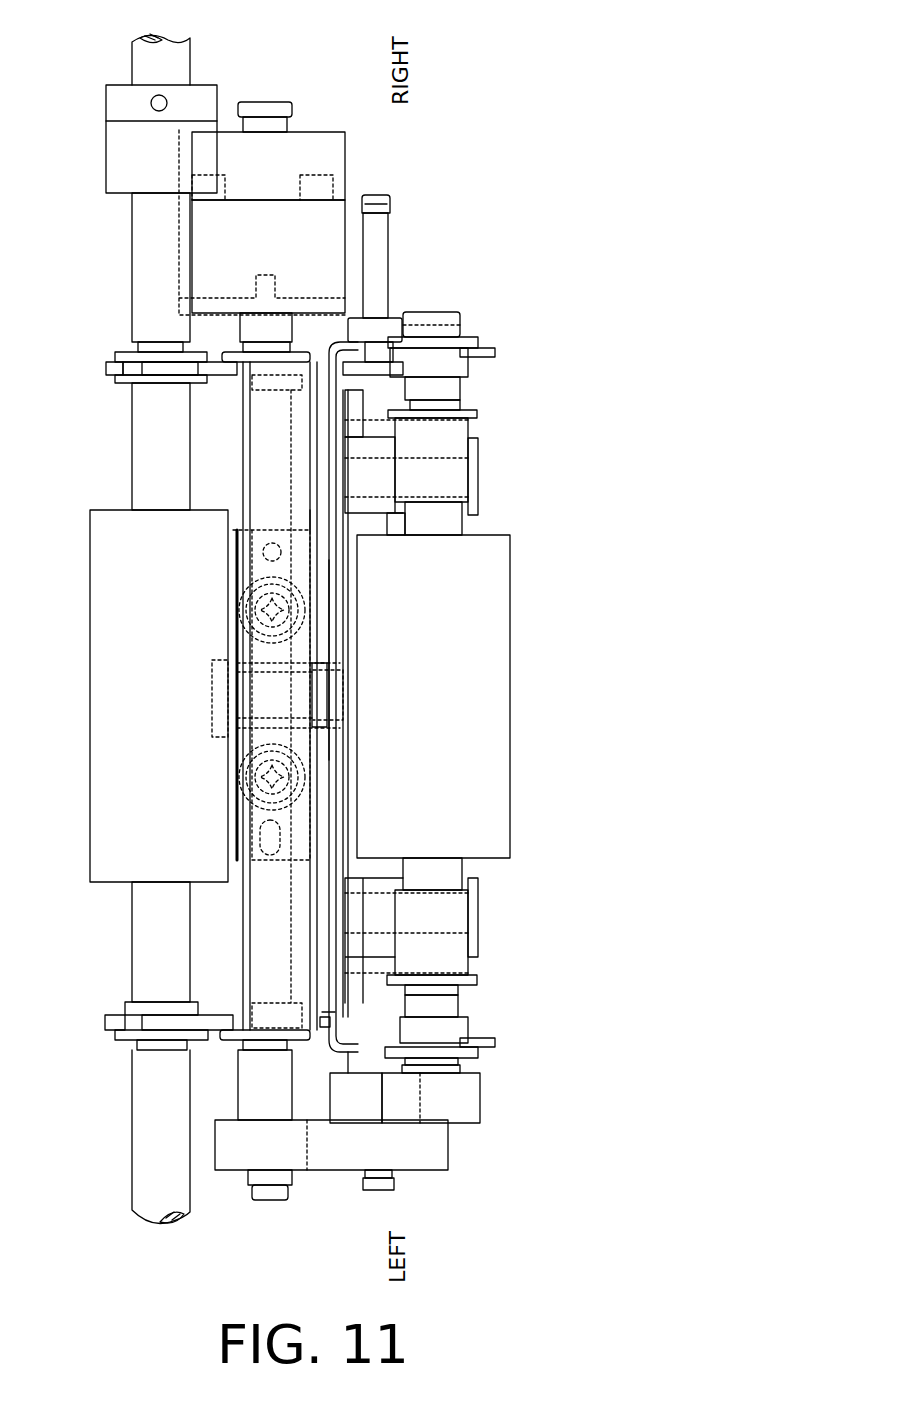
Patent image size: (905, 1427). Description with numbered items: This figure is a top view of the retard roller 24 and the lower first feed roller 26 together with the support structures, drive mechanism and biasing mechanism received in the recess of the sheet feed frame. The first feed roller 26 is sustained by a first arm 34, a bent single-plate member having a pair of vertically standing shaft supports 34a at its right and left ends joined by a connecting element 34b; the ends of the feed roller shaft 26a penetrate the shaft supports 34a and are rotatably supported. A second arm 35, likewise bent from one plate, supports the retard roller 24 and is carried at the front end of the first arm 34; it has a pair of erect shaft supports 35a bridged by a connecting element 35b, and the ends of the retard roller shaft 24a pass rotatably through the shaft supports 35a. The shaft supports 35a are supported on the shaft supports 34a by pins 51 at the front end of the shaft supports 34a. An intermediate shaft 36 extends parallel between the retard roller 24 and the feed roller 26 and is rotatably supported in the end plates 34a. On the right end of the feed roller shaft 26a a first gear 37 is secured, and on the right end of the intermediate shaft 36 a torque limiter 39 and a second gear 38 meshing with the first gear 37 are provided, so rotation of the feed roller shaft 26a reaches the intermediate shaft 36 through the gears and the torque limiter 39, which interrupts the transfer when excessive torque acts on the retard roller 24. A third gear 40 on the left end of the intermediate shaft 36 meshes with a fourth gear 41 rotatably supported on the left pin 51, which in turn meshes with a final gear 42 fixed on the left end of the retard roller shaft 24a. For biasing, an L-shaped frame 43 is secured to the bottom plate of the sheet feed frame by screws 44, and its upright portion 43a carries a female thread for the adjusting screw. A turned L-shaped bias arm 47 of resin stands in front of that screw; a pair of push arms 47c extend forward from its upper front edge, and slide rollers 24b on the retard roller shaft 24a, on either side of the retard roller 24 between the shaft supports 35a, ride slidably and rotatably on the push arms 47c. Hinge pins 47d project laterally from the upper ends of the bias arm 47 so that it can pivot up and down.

The retard roller 24 is at (451, 735).
The retard roller shaft 24a is at (430, 312).
The slide rollers 24b is at (478, 418).
The first feed roller 26 is at (176, 740).
The feed roller shaft 26a is at (135, 462).
The first arm 34 is at (106, 368).
The shaft supports 34a is at (215, 380).
The connecting element 34b is at (302, 515).
The second arm 35 is at (504, 344).
The shaft supports 35a is at (478, 346).
The connecting element 35b is at (345, 650).
The intermediate shaft 36 is at (272, 72).
The first gear 37 is at (160, 172).
The second gear 38 is at (334, 134).
The torque limiter 39 is at (284, 248).
The third gear 40 is at (284, 1161).
The fourth gear 41 is at (340, 1105).
The final gear 42 is at (472, 1106).
The L-shaped frame 43 is at (282, 530).
The upright portion 43a is at (215, 665).
The screws 44 is at (262, 600).
The bias arm 47 is at (392, 520).
The push arms 47c is at (478, 455).
The hinge pins 47d is at (357, 416).
The pins 51 is at (388, 234).